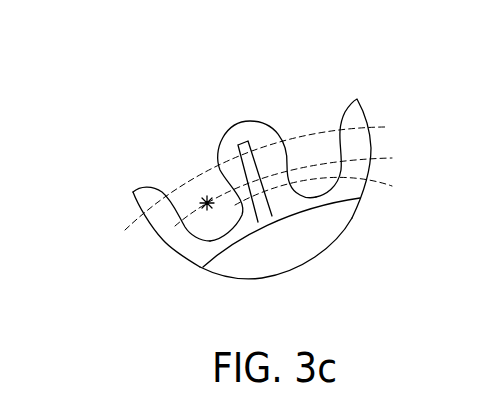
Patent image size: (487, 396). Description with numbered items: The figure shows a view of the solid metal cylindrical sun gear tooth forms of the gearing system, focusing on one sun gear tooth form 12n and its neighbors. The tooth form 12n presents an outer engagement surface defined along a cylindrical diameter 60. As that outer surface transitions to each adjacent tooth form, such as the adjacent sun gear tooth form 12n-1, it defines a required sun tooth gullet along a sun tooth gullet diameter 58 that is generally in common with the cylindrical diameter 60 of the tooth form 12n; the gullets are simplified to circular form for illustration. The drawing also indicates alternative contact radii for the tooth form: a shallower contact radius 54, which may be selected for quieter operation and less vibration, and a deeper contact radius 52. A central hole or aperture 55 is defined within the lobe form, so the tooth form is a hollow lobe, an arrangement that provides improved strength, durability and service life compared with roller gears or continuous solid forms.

The adjacent sun gear tooth form 12n-1 is at (133, 192).
The sun gear tooth form 12n is at (243, 123).
The deeper contact radius 52 is at (160, 247).
The shallower contact radius 54 is at (142, 220).
The central hole or aperture 55 is at (370, 180).
The sun tooth gullet diameter 58 is at (204, 200).
The cylindrical diameter 60 is at (240, 142).